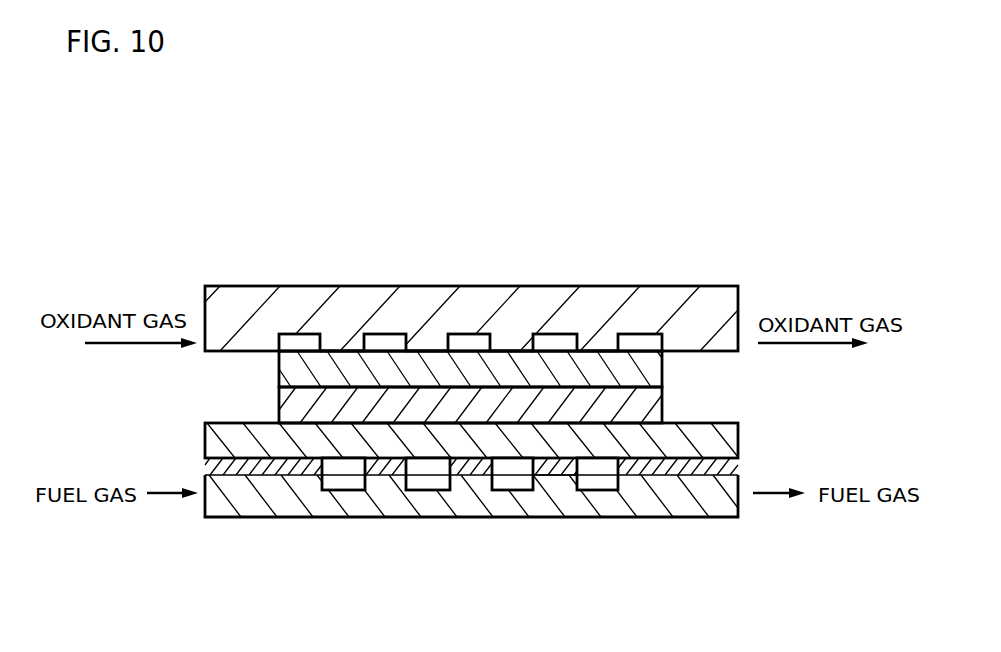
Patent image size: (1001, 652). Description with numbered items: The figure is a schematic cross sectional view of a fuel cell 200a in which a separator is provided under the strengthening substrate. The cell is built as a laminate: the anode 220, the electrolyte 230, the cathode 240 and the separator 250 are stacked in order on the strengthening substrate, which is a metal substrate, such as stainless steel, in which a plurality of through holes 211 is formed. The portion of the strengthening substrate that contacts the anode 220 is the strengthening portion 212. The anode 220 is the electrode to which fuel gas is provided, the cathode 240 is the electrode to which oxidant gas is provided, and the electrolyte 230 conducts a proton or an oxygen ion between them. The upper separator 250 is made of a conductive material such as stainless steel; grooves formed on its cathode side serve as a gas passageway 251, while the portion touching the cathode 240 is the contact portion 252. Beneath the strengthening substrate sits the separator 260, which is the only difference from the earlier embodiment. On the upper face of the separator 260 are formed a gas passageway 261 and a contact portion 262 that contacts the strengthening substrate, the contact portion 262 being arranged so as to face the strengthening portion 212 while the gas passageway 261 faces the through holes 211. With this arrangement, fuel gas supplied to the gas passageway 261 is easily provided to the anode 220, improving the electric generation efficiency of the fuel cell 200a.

The fuel cell 200a is at (602, 238).
The separator 250 is at (733, 302).
The gas passageway 251 is at (307, 342).
The contact portion 252 is at (344, 356).
The cathode 240 is at (653, 380).
The electrolyte 230 is at (650, 417).
The anode 220 is at (732, 433).
The strengthening portion 212 is at (731, 466).
The separator 260 is at (617, 505).
The through hole 211 is at (417, 467).
The gas passageway 261 is at (442, 483).
The contact portion 262 is at (563, 483).